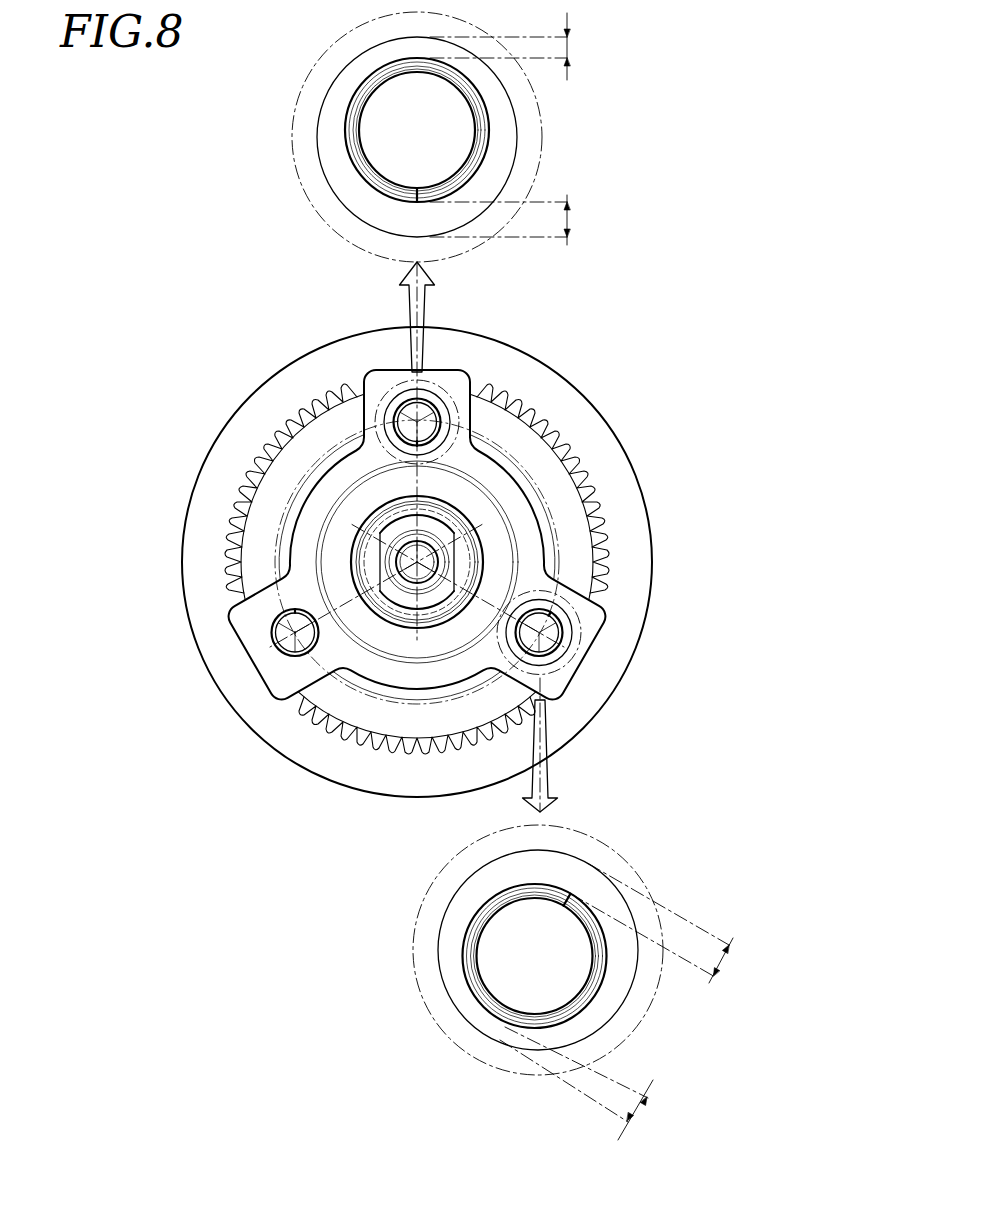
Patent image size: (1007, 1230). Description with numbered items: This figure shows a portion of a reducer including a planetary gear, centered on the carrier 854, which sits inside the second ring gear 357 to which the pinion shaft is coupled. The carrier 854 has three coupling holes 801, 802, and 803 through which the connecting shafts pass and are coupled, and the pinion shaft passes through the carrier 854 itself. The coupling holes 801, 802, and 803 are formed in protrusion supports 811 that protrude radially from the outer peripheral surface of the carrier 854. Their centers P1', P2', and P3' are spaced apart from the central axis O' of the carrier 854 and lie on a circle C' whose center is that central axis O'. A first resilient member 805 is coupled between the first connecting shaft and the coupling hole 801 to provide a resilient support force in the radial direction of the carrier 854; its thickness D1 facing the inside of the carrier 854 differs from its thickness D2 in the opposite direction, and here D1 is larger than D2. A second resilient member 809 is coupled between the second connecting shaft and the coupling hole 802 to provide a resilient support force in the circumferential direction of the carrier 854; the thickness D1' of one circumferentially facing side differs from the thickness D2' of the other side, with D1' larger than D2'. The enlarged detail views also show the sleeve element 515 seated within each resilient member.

The second ring gear 357 is at (648, 556).
The bushing (split sleeve) 515 is at (350, 122).
The coupling hole 801 is at (457, 420).
The coupling hole 802 is at (568, 644).
The coupling hole 803 is at (272, 633).
The first resilient member 805 is at (510, 140).
The second resilient member 809 is at (573, 643).
The protrusion supports 811 is at (455, 378).
The carrier 854 is at (518, 512).
The center of coupling hole P1' is at (378, 356).
The center of coupling hole P2' is at (628, 617).
The center of coupling hole P3' is at (238, 695).
The circle C' is at (348, 562).
The central axis O' is at (339, 454).
The thickness D1 is at (529, 220).
The thickness D2 is at (529, 46).
The thickness D1' is at (674, 924).
The thickness D2' is at (596, 1083).